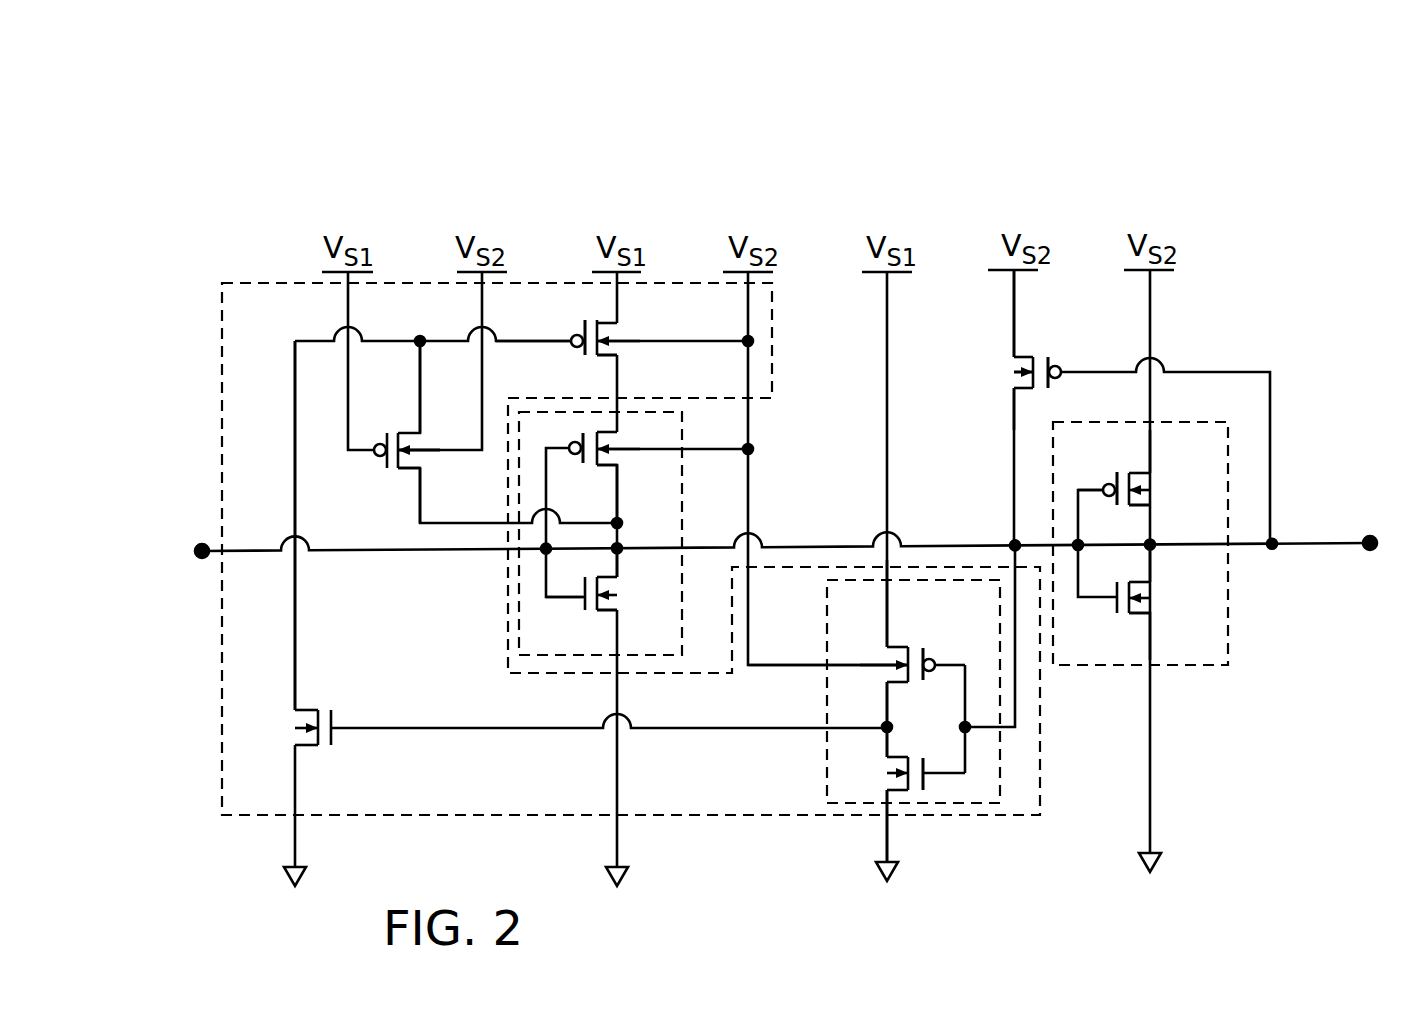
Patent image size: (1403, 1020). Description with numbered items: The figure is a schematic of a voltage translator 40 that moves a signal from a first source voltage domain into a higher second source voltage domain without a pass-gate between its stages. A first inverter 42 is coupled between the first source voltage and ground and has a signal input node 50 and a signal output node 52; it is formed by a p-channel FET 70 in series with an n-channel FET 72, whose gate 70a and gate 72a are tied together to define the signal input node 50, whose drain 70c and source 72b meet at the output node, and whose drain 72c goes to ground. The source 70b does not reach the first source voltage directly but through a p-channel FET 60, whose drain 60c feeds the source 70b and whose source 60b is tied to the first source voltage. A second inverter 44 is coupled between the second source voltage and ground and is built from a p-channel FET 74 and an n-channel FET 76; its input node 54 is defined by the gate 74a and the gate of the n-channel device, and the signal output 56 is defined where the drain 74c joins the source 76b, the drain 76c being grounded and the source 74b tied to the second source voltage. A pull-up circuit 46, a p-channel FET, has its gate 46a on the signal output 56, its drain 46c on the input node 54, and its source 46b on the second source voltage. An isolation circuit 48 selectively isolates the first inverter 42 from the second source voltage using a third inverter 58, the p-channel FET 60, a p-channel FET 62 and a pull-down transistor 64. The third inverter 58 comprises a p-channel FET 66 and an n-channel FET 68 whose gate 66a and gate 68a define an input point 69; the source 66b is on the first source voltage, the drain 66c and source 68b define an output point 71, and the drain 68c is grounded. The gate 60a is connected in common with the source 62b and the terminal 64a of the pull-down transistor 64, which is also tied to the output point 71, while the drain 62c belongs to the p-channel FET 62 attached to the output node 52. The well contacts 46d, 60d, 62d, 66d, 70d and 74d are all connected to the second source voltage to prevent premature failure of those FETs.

The voltage translator 40 is at (1117, 137).
The first inverter 42 is at (688, 468).
The second inverter 44 is at (1200, 670).
The pull-up circuit 46 is at (1008, 370).
The gate of p-channel FET 46 46a is at (1068, 371).
The source of p-channel FET 46 46b is at (1040, 308).
The drain of p-channel FET 46 46c is at (1014, 404).
The well contact of p-channel FET 46 46d is at (1025, 376).
The isolation circuit 48 is at (247, 280).
The signal input node 50 is at (551, 551).
The signal output node 52 is at (620, 577).
The input node 54 is at (1082, 548).
The signal output 56 is at (1276, 547).
The third inverter 58 is at (821, 590).
The p-channel FET 60 is at (614, 338).
The gate of p-channel FET 60 60a is at (556, 341).
The source of p-channel FET 60 60b is at (586, 318).
The drain of p-channel FET 60 60c is at (603, 357).
The well contact of p-channel FET 60 60d is at (610, 346).
The p-channel FET 62 is at (410, 443).
The source of p-channel FET 62 62b is at (418, 400).
The drain of p-channel FET 62 62c is at (397, 470).
The well contact of p-channel FET 62 62d is at (405, 452).
The pull-down transistor 64 is at (300, 718).
The terminal of pull-down transistor 64 64a is at (296, 617).
The p-channel FET 66 is at (885, 678).
The gate of p-channel FET 66 66a is at (932, 658).
The source of p-channel FET 66 66b is at (887, 592).
The drain of p-channel FET 66 66c is at (887, 700).
The well contact of p-channel FET 66 66d is at (898, 660).
The n-channel FET 68 is at (890, 773).
The gate of n-channel FET 68 68a is at (925, 775).
The source of n-channel FET 68 68b is at (887, 750).
The drain of n-channel FET 68 68c is at (888, 845).
The input point 69 is at (963, 726).
The p-channel FET 70 is at (614, 458).
The gate of p-channel FET 70 70a is at (553, 450).
The source of p-channel FET 70 70b is at (584, 431).
The drain of p-channel FET 70 70c is at (606, 467).
The well contact of p-channel FET 70 70d is at (604, 449).
The output point 71 is at (904, 722).
The n-channel FET 72 is at (623, 596).
The gate of n-channel FET 72 72a is at (560, 590).
The source of n-channel FET 72 72b is at (604, 572).
The drain of n-channel FET 72 72c is at (604, 608).
The p-channel FET 74 is at (1152, 480).
The gate of p-channel FET 74 74a is at (1092, 488).
The source of p-channel FET 74 74b is at (1152, 464).
The drain of p-channel FET 74 74c is at (1140, 507).
The well contact of p-channel FET 74 74d is at (1130, 466).
The n-channel FET 76 is at (1163, 612).
The source of n-channel FET 76 76b is at (1200, 578).
The drain of n-channel FET 76 76c is at (1132, 618).